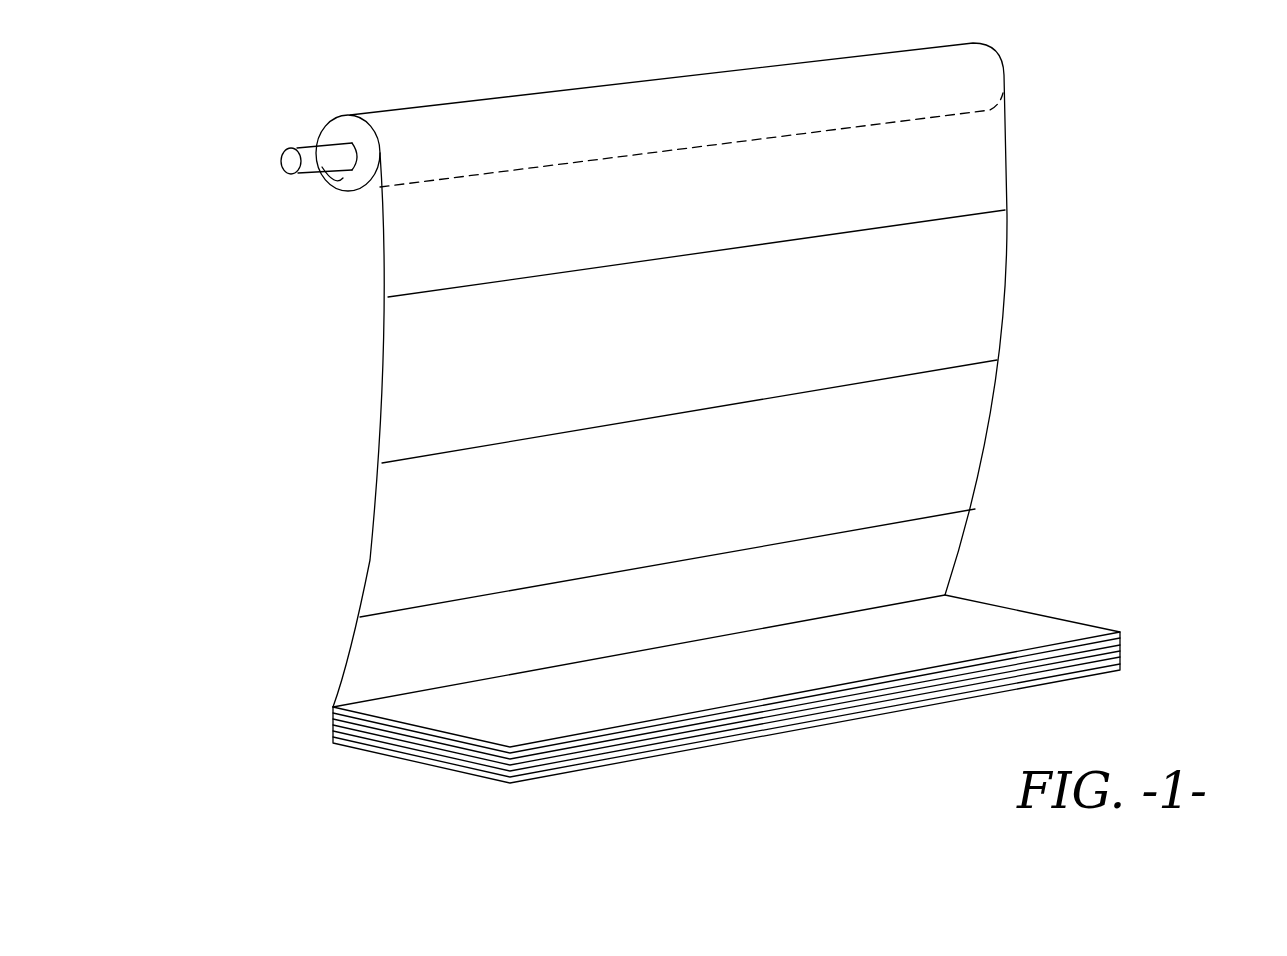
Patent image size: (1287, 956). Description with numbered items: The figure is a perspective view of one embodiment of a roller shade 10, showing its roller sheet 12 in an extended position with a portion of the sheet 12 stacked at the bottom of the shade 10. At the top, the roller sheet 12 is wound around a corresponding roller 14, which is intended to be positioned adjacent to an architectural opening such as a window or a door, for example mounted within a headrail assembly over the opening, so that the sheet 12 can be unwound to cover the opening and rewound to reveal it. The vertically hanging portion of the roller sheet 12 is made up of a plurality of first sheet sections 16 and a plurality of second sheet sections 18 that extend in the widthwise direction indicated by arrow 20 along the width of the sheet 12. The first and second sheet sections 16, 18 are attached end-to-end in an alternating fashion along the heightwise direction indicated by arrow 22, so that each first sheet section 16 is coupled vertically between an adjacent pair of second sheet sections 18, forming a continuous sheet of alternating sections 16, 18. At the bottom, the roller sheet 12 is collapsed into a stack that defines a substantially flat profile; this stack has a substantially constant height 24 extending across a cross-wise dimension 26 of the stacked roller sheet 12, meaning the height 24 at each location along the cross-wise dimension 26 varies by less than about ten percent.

The roller shade 10 is at (262, 95).
The roller sheet 12 is at (980, 177).
The roller 14 is at (343, 178).
The first sheet section 16 is at (402, 250).
The second sheet section 18 is at (473, 120).
The arrow indicating widthwise direction 20 is at (662, 807).
The arrow indicating heightwise direction 22 is at (1103, 392).
The height 24 is at (258, 815).
The cross-wise dimension 26 is at (512, 817).